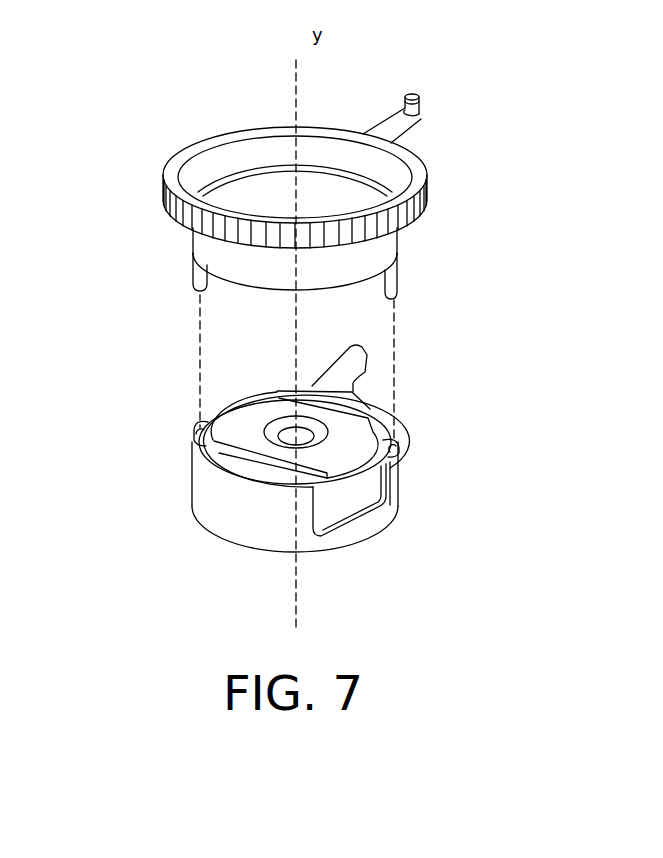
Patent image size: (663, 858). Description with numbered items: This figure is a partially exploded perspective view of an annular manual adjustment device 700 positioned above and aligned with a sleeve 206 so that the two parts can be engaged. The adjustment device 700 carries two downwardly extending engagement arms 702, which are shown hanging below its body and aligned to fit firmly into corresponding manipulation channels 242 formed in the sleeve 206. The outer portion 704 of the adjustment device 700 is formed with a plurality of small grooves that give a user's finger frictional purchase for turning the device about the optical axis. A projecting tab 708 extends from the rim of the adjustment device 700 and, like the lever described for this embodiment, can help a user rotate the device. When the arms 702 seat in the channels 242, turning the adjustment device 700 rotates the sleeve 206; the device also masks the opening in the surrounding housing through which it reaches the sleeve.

The manual adjustment device 700 is at (104, 207).
The outer portion 704 is at (407, 218).
The handle tab 708 is at (417, 122).
The engagement arms 702 is at (393, 282).
The sleeve 206 is at (217, 507).
The manipulation channels 242 is at (193, 440).